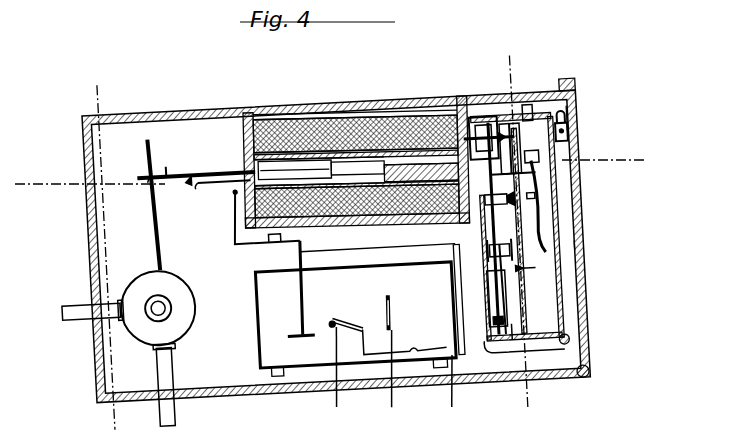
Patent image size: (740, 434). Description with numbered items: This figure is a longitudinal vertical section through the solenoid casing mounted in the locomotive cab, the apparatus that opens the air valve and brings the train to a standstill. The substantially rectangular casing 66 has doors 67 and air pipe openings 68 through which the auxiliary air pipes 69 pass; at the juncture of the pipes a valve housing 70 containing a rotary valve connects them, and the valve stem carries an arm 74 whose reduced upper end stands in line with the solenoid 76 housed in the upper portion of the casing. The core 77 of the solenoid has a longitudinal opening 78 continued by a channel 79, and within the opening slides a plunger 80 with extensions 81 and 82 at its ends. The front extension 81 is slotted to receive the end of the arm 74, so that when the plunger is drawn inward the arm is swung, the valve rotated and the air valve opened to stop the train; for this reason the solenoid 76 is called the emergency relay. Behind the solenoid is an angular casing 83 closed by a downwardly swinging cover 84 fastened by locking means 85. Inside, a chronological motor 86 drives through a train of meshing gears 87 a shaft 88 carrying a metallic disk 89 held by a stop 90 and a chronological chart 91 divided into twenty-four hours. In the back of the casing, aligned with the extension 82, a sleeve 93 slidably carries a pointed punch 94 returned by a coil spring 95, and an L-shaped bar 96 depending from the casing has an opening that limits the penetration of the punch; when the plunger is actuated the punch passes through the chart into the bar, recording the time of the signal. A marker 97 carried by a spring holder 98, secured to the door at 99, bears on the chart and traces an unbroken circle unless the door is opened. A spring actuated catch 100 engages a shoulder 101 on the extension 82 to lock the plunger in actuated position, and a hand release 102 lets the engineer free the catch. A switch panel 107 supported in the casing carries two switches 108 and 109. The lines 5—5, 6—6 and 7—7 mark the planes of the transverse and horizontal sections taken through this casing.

The casing 66 is at (271, 108).
The door 67 is at (590, 266).
The air pipe opening 68 is at (176, 393).
The auxiliary air pipe 69 is at (73, 307).
The valve housing 70 is at (133, 285).
The arm 74 is at (148, 225).
The solenoid 76 is at (338, 128).
The core 77 is at (406, 122).
The longitudinally extending opening 78 is at (366, 120).
The channel 79 is at (431, 121).
The plunger 80 is at (314, 118).
The extension 81 is at (163, 172).
The extension 82 is at (396, 120).
The angular casing 83 is at (545, 345).
The cover 84 is at (560, 315).
The locking means 85 is at (583, 121).
The chronological motor 86 is at (496, 330).
The train of meshing gears 87 is at (512, 333).
The shaft 88 is at (522, 225).
The metallic disk 89 is at (520, 282).
The stop 90 is at (456, 226).
The chronological chart 91 is at (528, 292).
The sleeve 93 is at (357, 224).
The punch 94 is at (500, 130).
The coil spring 95 is at (480, 138).
The L-shaped bar 96 is at (510, 136).
The marker 97 is at (530, 190).
The spring holder 98 is at (525, 205).
The securing point 99 is at (564, 92).
The spring actuated catch 100 is at (198, 192).
The shoulder 101 is at (187, 185).
The hand release 102 is at (297, 283).
The switch panel 107 is at (263, 331).
The switch 108 is at (385, 350).
The switch 109 is at (408, 309).
The section line 5— 5 is at (106, 95).
The section line 6— 6 is at (527, 70).
The section line 7— 7 is at (47, 172).